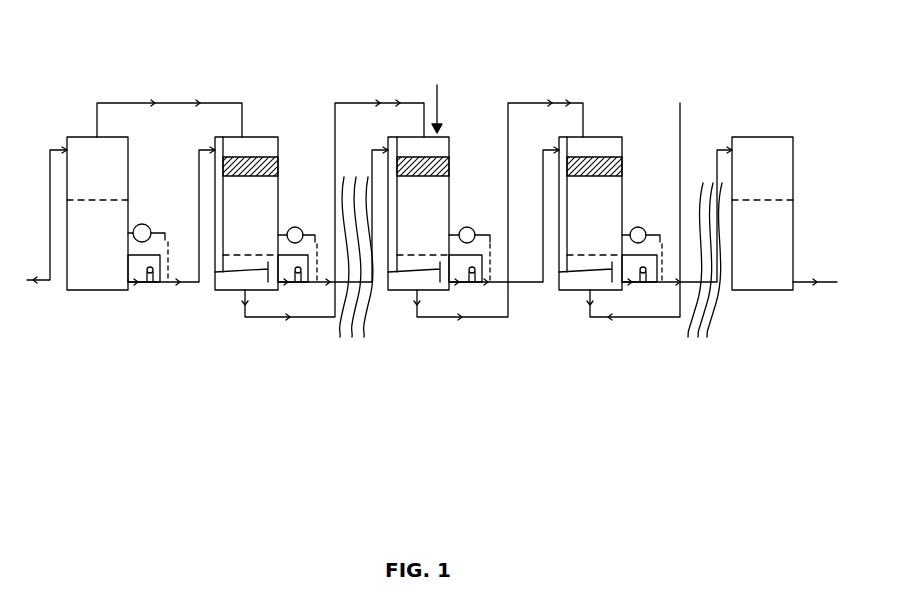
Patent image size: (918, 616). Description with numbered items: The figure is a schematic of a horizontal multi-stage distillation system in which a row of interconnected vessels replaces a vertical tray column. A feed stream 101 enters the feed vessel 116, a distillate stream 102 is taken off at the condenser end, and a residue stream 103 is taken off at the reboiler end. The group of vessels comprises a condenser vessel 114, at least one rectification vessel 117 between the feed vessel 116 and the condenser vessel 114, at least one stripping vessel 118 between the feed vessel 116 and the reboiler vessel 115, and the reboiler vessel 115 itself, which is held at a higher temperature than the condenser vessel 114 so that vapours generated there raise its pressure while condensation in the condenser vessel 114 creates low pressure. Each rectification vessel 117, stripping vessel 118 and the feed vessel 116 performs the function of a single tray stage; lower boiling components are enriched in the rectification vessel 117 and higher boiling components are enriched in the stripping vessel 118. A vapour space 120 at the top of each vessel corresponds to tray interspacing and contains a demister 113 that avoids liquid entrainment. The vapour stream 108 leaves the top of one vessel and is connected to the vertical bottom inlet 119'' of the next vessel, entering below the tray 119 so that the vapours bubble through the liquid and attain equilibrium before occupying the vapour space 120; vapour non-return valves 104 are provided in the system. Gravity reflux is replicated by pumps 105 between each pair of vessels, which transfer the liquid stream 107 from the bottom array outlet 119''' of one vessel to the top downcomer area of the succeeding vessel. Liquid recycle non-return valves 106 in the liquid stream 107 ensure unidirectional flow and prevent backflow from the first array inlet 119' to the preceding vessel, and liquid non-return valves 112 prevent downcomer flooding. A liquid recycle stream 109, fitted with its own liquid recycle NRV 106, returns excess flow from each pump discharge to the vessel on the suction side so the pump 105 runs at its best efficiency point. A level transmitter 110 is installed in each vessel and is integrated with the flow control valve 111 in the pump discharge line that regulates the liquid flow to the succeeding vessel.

The feed stream 101 is at (436, 93).
The distillate stream 102 is at (38, 283).
The residue stream 103 is at (823, 283).
The vapour non-return valve 104 is at (590, 302).
The pump 105 is at (150, 283).
The liquid recycle non-return valve 106 is at (648, 282).
The liquid stream 107 is at (448, 295).
The vapour stream 108 is at (632, 317).
The liquid recycle stream 109 is at (645, 228).
The level transmitter 110 is at (143, 224).
The flow control valve 111 is at (696, 279).
The liquid non-return valve 112 is at (183, 283).
The demister 113 is at (258, 155).
The condenser vessel 114 is at (87, 137).
The reboiler vessel 115 is at (780, 137).
The feed vessel 116 is at (442, 128).
The rectification vessel 117 is at (250, 137).
The stripping vessel 118 is at (602, 137).
The tray 119 is at (366, 288).
The first array inlet 119' is at (349, 112).
The vertical bottom inlet 119'' is at (374, 377).
The bottom array outlet 119''' is at (467, 372).
The vapour space 120 is at (438, 200).